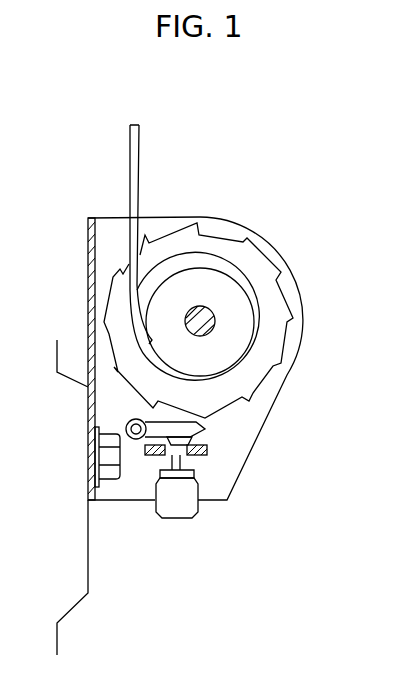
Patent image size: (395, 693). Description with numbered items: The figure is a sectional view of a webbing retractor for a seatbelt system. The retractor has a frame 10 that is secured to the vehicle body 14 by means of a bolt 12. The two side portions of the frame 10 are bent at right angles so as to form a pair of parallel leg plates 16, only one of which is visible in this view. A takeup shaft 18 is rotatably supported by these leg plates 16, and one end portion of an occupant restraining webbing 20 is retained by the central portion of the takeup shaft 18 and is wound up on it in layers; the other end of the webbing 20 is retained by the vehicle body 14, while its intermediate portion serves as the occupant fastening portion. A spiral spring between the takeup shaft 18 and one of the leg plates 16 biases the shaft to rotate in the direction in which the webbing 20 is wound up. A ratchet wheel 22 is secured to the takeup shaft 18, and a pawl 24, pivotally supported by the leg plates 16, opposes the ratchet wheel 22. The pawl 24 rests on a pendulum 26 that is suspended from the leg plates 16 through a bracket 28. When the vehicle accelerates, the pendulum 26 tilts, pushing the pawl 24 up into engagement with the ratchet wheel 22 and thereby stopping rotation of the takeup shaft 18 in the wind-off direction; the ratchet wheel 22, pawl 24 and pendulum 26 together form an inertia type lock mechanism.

The frame 10 is at (88, 270).
The bolt 12 is at (120, 462).
The vehicle body 14 is at (88, 572).
The leg plates 16 is at (251, 452).
The takeup shaft 18 is at (200, 337).
The occupant restraining webbing 20 is at (140, 158).
The ratchet wheel 22 is at (287, 263).
The pawl 24 is at (205, 428).
The pendulum 26 is at (193, 517).
The bracket 28 is at (204, 453).